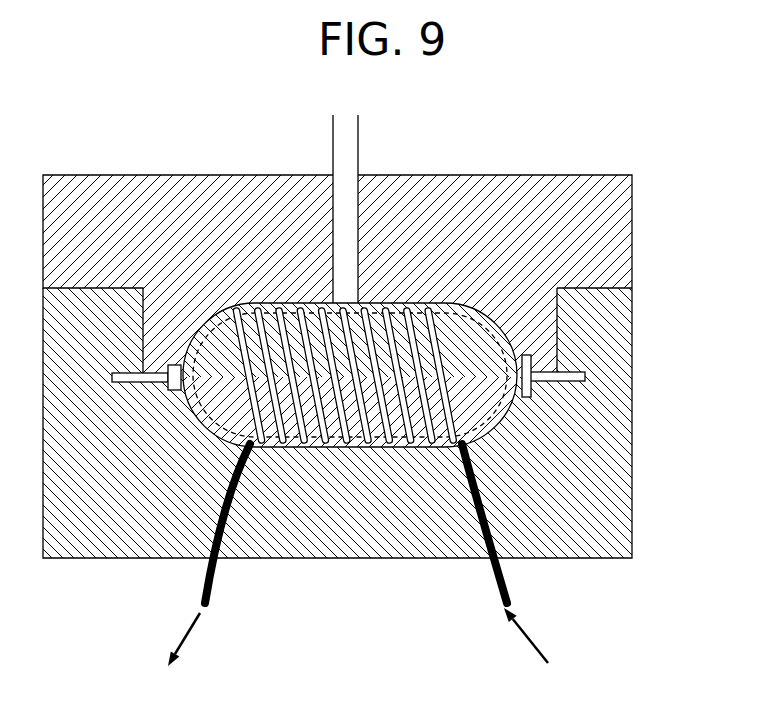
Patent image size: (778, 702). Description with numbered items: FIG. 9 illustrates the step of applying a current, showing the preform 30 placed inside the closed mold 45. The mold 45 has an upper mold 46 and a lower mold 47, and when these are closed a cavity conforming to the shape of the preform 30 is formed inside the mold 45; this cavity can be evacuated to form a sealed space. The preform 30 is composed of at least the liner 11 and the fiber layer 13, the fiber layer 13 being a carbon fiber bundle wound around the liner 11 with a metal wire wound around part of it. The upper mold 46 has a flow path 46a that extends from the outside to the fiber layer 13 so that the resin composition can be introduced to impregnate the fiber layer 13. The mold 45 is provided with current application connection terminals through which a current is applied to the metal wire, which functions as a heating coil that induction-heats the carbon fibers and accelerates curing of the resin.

The liner 11 is at (315, 327).
The fiber layer 13 is at (337, 365).
The preform 30 is at (452, 340).
The mold 45 is at (385, 296).
The upper mold 46 is at (355, 275).
The flow path 46a is at (343, 212).
The lower mold 47 is at (657, 347).